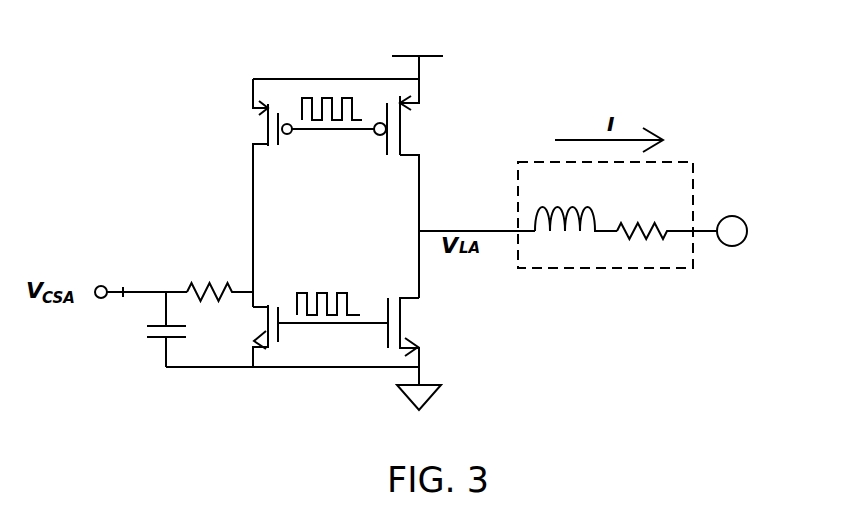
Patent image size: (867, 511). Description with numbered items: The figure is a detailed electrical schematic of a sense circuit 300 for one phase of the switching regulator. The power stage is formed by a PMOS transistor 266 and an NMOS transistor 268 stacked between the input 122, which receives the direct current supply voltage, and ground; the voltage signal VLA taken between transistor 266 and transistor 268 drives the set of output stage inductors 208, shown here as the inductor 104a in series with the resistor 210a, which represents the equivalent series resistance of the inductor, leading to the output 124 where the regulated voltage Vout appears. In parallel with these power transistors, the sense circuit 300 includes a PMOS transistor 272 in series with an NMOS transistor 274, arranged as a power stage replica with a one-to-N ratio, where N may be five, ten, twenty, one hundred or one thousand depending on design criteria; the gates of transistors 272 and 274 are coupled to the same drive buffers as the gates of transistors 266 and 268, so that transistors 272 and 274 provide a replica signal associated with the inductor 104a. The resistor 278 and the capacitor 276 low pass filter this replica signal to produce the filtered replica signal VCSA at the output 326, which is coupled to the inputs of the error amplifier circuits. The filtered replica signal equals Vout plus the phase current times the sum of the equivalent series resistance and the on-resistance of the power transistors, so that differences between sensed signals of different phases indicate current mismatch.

The sense circuit 300 is at (330, 67).
The input 122 is at (421, 66).
The transistor 272 is at (253, 93).
The transistor 266 is at (401, 126).
The transistor 274 is at (273, 287).
The transistor 268 is at (401, 318).
The resistor 278 is at (193, 285).
The output 326 is at (123, 294).
The capacitor 276 is at (152, 340).
The set of output stage inductors 208 is at (673, 162).
The inductor 104a is at (567, 223).
The resistor 210a is at (648, 235).
The output 124 is at (703, 230).